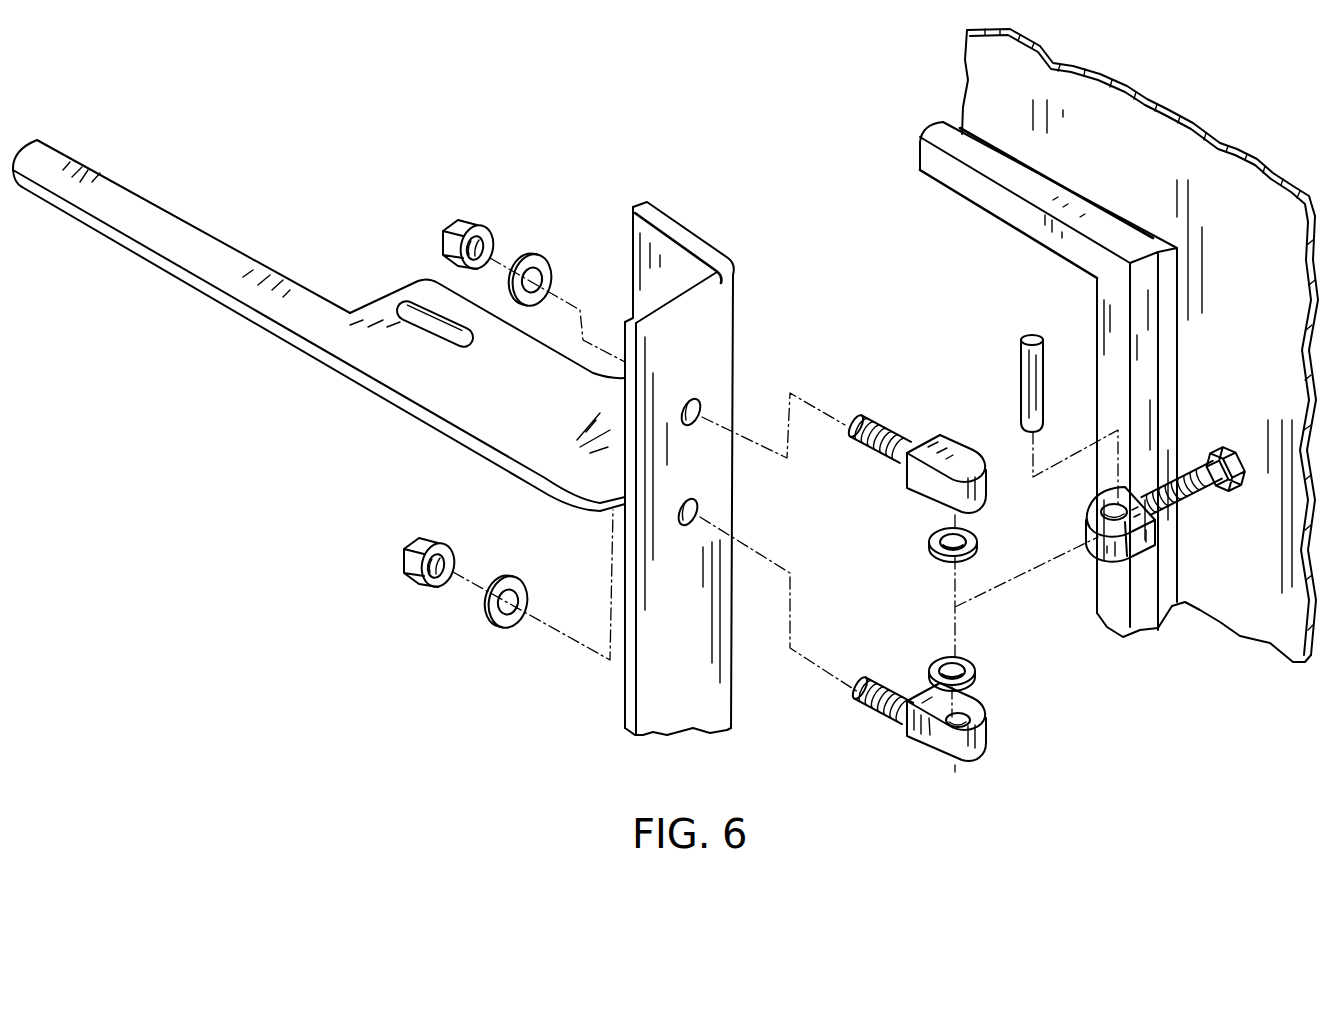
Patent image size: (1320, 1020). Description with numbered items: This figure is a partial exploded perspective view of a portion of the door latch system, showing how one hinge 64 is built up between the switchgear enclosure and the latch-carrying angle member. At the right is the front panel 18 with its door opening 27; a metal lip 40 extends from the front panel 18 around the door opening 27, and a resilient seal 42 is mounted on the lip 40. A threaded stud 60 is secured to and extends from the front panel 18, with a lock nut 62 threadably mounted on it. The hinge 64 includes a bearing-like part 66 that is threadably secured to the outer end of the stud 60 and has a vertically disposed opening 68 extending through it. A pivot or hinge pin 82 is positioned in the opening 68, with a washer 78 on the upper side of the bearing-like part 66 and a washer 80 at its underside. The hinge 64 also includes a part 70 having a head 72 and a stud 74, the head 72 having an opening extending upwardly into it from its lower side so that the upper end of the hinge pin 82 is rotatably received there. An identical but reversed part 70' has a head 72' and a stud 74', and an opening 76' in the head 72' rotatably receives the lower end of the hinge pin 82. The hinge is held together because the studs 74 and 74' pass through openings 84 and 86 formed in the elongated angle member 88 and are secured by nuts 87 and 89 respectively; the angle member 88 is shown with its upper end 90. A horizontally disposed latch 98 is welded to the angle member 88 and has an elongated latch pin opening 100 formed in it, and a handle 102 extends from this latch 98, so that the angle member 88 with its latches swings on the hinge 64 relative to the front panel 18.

The front panel 18 is at (1140, 345).
The door opening 27 is at (985, 245).
The lip 40 is at (1165, 342).
The resilient seal 42 is at (1107, 283).
The threaded stud 60 is at (1200, 492).
The lock nut 62 is at (1227, 440).
The hinge 64 is at (927, 398).
The bearing-like part 66 is at (1103, 540).
The vertically disposed opening 68 is at (1137, 556).
The part 70 is at (962, 576).
The part 70' is at (919, 801).
The head 72 is at (948, 447).
The head 72' is at (1004, 745).
The stud 74 is at (874, 402).
The stud 74' is at (859, 728).
The opening 76' is at (1021, 722).
The washer 78 is at (977, 535).
The washer 80 is at (976, 672).
The hinge pin 82 is at (1023, 352).
The opening 84 is at (697, 400).
The opening 86 is at (698, 503).
The nut 87 is at (473, 218).
The angle member 88 is at (714, 198).
The nut 89 is at (417, 545).
The upper end 90 is at (723, 250).
The latch 98 is at (388, 408).
The latch pin opening 100 is at (440, 333).
The handle 102 is at (237, 253).